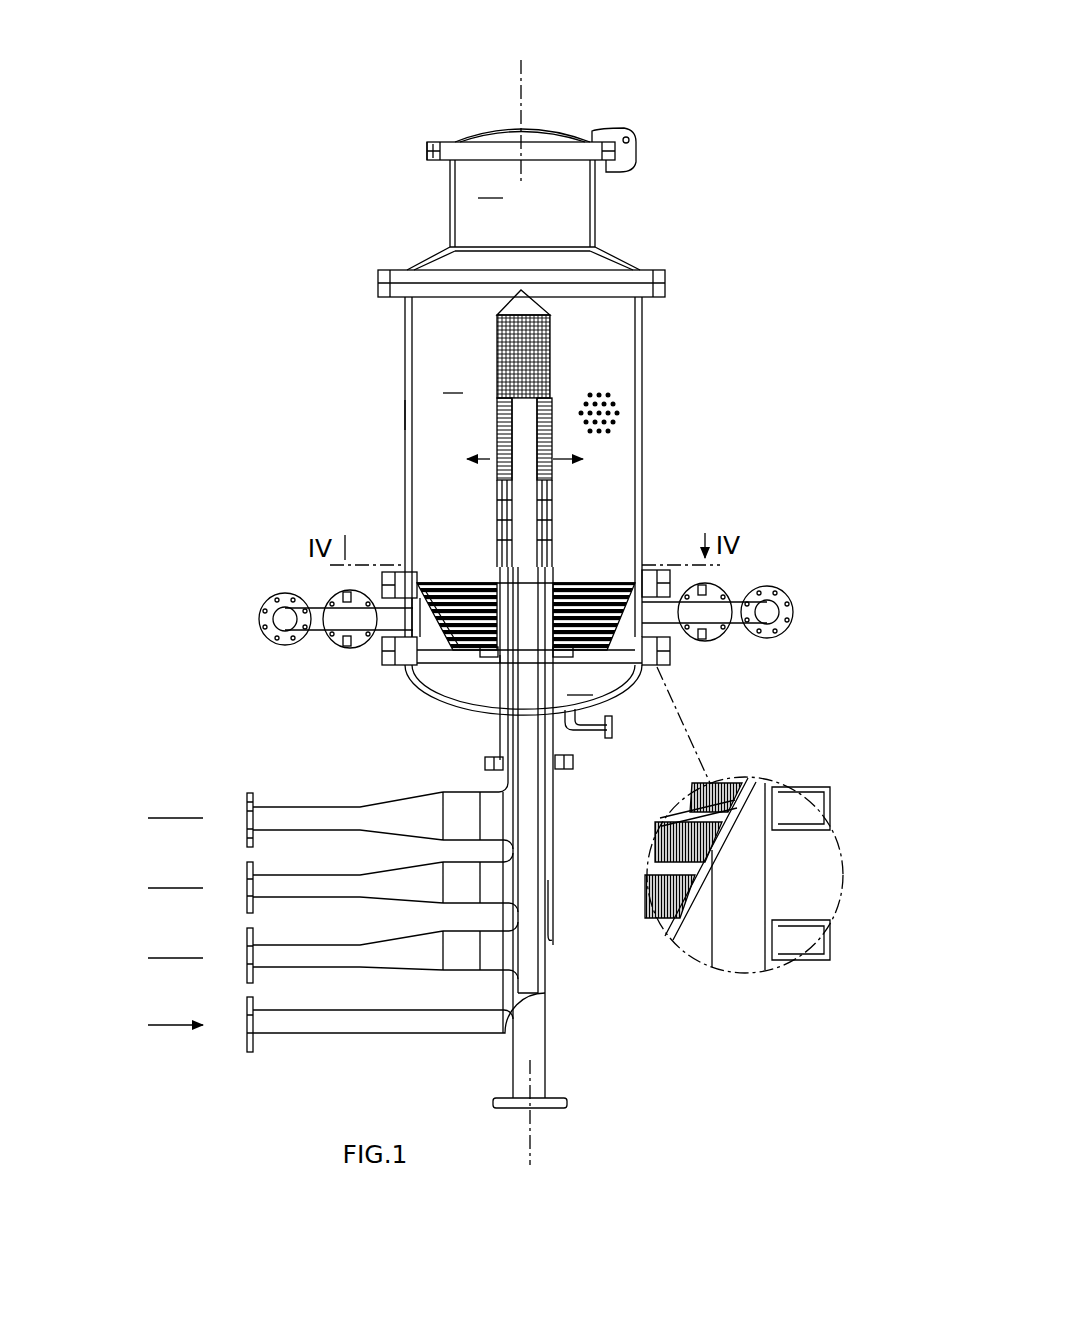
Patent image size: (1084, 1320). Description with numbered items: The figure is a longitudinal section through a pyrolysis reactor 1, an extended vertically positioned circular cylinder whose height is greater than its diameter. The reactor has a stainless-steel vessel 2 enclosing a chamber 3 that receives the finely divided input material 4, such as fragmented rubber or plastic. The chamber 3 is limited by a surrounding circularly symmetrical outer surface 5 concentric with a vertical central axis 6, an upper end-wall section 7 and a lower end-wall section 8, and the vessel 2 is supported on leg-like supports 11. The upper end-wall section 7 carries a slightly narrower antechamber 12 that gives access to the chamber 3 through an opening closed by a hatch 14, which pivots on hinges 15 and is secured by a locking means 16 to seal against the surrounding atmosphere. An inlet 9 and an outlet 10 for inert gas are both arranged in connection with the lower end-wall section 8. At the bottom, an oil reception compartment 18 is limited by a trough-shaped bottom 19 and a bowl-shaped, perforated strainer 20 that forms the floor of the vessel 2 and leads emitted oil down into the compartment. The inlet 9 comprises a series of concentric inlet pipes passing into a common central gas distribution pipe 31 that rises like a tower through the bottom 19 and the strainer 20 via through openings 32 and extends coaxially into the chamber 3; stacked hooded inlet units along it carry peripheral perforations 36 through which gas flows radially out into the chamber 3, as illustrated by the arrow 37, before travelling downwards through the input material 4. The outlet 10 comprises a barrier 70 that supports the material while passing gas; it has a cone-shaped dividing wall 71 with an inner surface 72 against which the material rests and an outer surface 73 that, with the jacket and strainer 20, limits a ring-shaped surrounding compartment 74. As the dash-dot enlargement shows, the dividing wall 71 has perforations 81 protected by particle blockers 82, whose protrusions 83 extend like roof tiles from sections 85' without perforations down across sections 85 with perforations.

The reactor 1 is at (262, 265).
The vessel 2 is at (680, 335).
The chamber 3 is at (453, 378).
The input material 4 is at (618, 408).
The outer surface 5 is at (405, 415).
The central axis 6 is at (527, 93).
The upper end-wall section 7 is at (612, 246).
The lower end-wall section 8 is at (408, 658).
The inlet 9 is at (212, 1067).
The outlet 10 is at (772, 557).
The leg-like supports 11 is at (541, 1047).
The antechamber 12 is at (455, 115).
The hatch 14 is at (505, 130).
The hinges 15 is at (636, 140).
The locking means 16 is at (430, 142).
The oil reception compartment 18 is at (523, 690).
The bottom 19 is at (620, 703).
The strainer 20 is at (592, 652).
The central gas distribution pipe 31 is at (560, 794).
The through openings 32 is at (493, 668).
The perforations 36 is at (497, 338).
The arrow 37 is at (555, 459).
The barrier 70 is at (415, 637).
The cone-shaped dividing wall 71 is at (730, 810).
The inner surface 72 is at (657, 913).
The outer surface 73 is at (750, 803).
The ring-shaped surrounding compartment 74 is at (437, 640).
The perforations 81 is at (657, 845).
The particle blockers 82 is at (683, 806).
The protrusions 83 is at (688, 812).
The sections with perforations 85 is at (821, 862).
The sections without perforations 85' is at (815, 886).